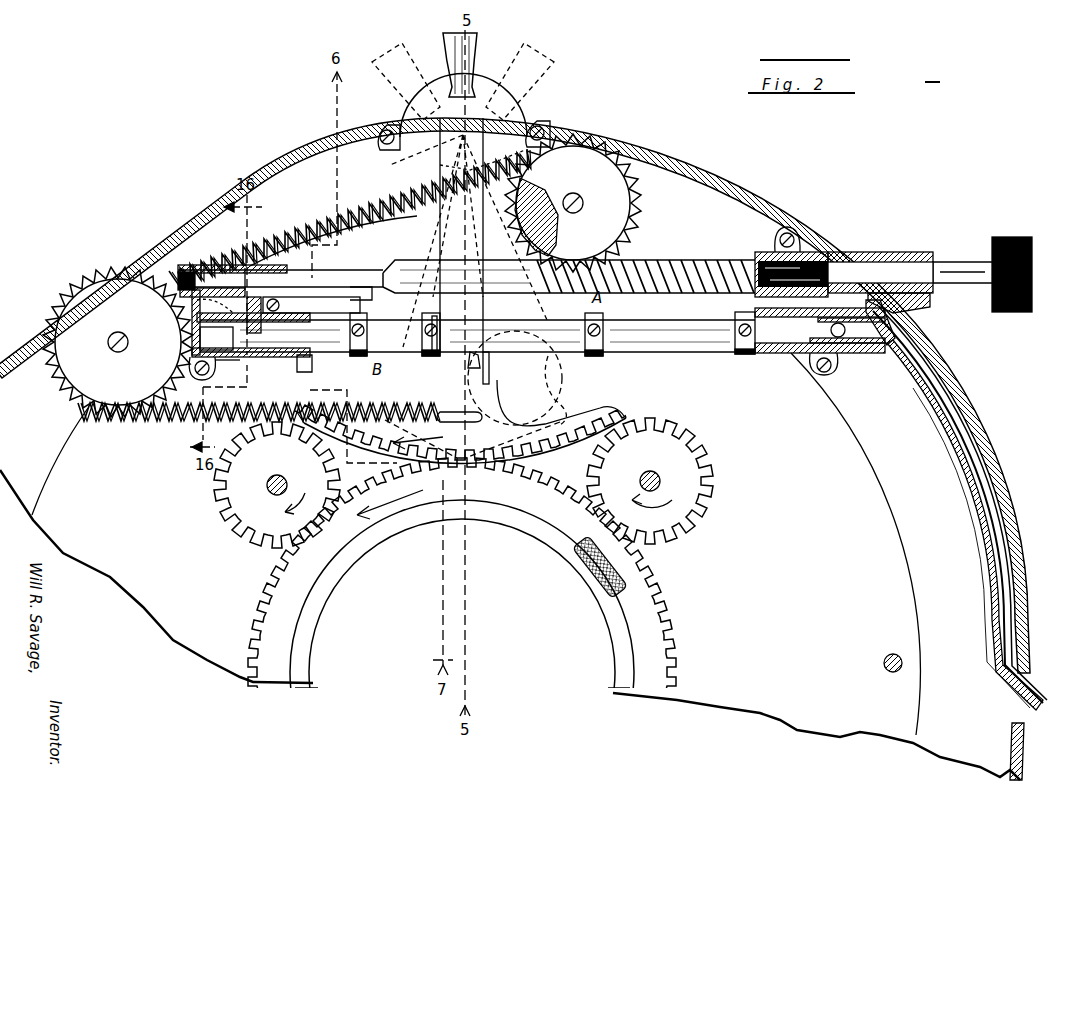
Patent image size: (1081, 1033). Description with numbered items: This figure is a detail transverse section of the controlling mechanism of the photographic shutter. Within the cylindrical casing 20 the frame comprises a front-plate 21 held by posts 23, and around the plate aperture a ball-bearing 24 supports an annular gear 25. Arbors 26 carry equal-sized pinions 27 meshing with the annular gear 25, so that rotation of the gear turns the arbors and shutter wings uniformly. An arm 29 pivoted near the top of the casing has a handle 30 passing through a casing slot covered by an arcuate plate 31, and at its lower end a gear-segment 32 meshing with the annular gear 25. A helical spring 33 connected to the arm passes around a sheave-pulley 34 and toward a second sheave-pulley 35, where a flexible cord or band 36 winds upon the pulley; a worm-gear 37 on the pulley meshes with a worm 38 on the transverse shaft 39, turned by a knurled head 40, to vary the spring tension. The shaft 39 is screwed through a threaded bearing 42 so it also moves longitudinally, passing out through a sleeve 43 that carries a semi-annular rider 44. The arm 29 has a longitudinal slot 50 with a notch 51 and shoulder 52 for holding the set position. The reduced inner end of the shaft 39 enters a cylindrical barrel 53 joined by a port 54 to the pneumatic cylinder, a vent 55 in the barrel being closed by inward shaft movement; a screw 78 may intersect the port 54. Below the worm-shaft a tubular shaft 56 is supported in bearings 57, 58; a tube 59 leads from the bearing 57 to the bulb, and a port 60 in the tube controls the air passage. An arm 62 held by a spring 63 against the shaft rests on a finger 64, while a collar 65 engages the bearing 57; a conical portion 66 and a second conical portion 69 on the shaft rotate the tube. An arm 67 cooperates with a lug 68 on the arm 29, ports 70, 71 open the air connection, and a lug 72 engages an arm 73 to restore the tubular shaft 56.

The casing 20 is at (125, 572).
The front-plate 21 is at (772, 716).
The posts 23 is at (883, 663).
The ball-bearing 24 is at (582, 546).
The annular gear 25 is at (648, 580).
The arbors 26 is at (660, 474).
The pinions 27 is at (706, 487).
The arm 29 is at (500, 402).
The handle 30 is at (480, 47).
The arcuate plate 31 is at (448, 108).
The gear-segment 32 is at (548, 452).
The helical spring 33 is at (170, 420).
The sheave-pulley 34 is at (72, 372).
The second sheave-pulley 35 is at (518, 228).
The flexible cord or band 36 is at (515, 168).
The worm-gear 37 is at (620, 192).
The worm 38 is at (635, 292).
The transverse shaft 39 is at (955, 263).
The knurled head 40 is at (1012, 237).
The bearing 42 is at (765, 255).
The sleeve 43 is at (888, 256).
The semi-annular rider 44 is at (922, 295).
The longitudinal slot 50 is at (455, 353).
The notch 51 is at (462, 405).
The shoulder 52 is at (478, 364).
The cylindrical barrel 53 is at (268, 268).
The port 54 is at (253, 277).
The vent 55 is at (350, 218).
The tubular shaft 56 is at (546, 390).
The bearing 57 is at (210, 268).
The bearing 58 is at (296, 355).
The tube 59 is at (1040, 705).
The port 60 is at (842, 340).
The arm 62 is at (345, 360).
The spring 63 is at (372, 292).
The finger 64 is at (311, 309).
The collar 65 is at (745, 355).
The conical portion 66 is at (386, 266).
The arm 67 is at (420, 346).
The lug 68 is at (436, 358).
The second conical portion 69 is at (412, 262).
The port 70 is at (305, 357).
The port 71 is at (240, 360).
The lug 72 is at (489, 374).
The arm 73 is at (604, 356).
The screw 78 is at (178, 275).